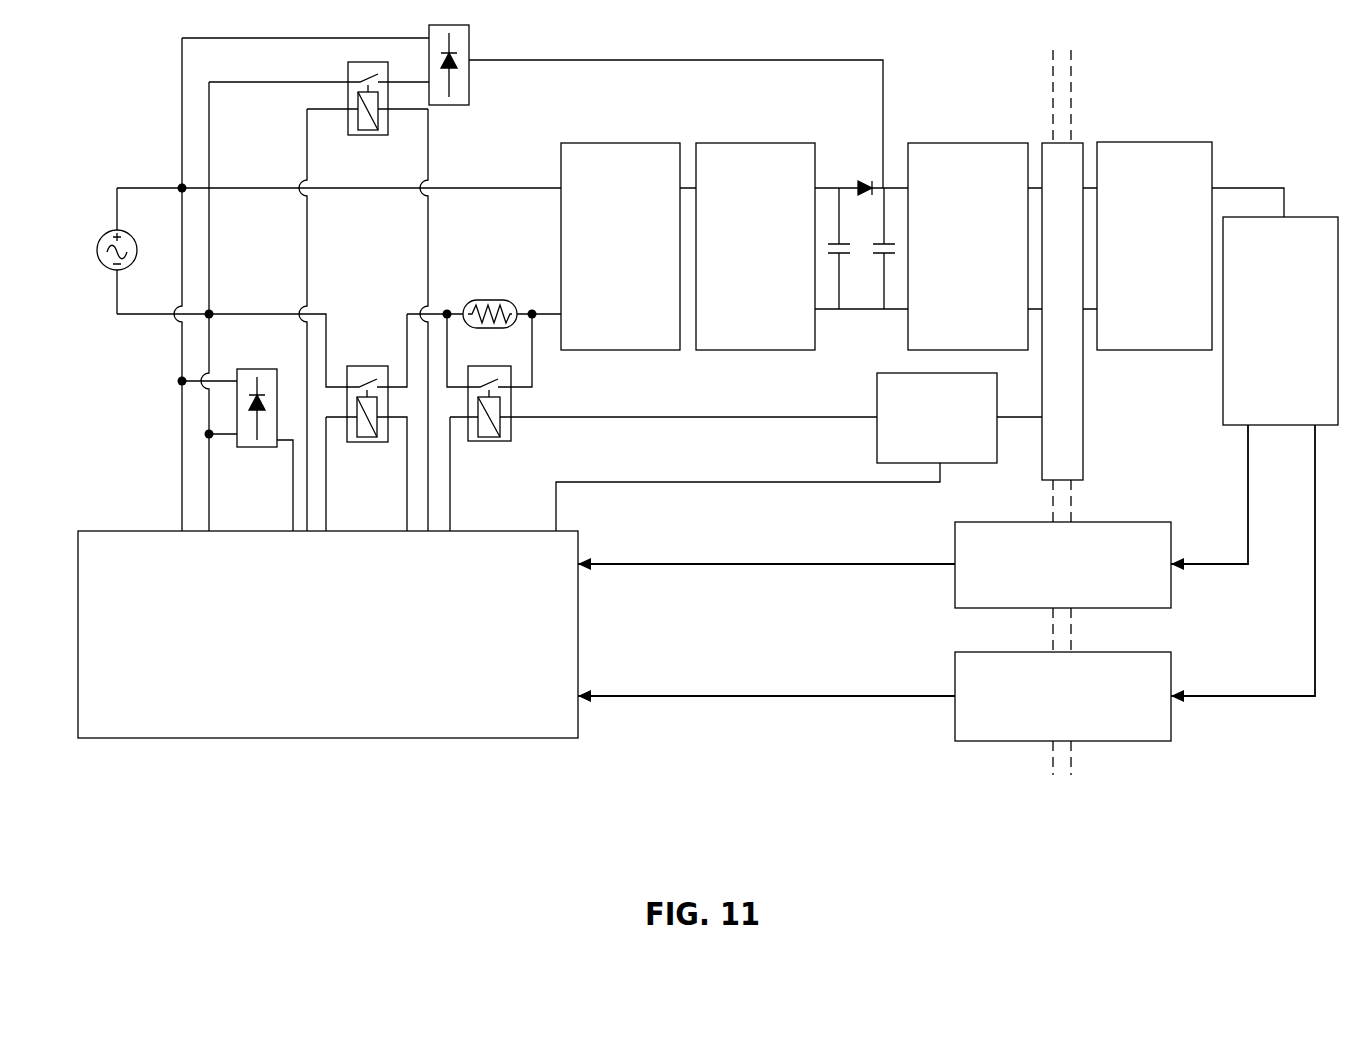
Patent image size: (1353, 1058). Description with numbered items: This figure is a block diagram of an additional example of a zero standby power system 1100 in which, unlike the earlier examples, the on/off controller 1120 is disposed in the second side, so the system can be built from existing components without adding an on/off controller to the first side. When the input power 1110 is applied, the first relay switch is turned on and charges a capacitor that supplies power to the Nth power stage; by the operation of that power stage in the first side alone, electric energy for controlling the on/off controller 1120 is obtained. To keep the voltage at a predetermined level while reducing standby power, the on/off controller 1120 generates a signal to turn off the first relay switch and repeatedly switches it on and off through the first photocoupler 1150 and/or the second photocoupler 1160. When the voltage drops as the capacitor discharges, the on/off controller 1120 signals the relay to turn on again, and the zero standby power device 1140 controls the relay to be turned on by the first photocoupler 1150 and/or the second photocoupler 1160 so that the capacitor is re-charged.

The zero standby power system 1100 is at (700, 445).
The input power 1110 is at (108, 232).
The on/off controller 1120 is at (1320, 217).
The zero standby power device 1140 is at (147, 531).
The first photocoupler 1150 is at (953, 580).
The second photocoupler 1160 is at (953, 718).